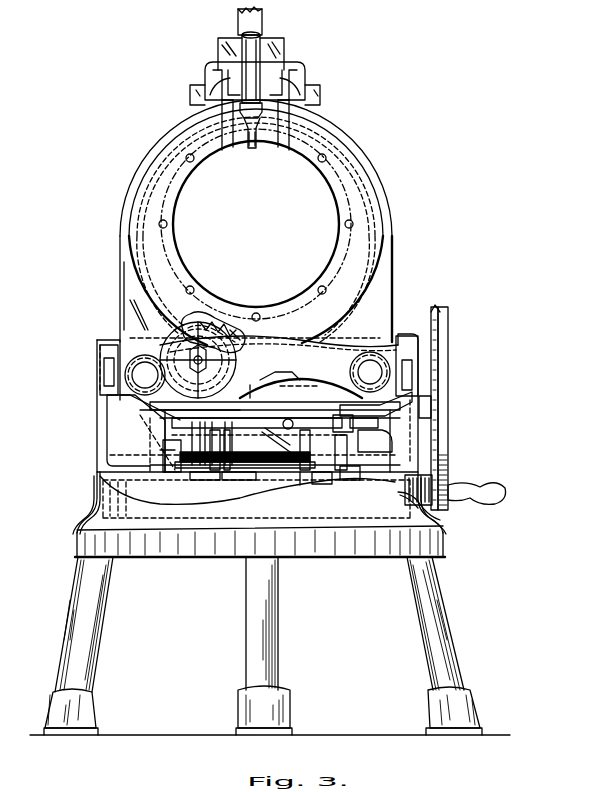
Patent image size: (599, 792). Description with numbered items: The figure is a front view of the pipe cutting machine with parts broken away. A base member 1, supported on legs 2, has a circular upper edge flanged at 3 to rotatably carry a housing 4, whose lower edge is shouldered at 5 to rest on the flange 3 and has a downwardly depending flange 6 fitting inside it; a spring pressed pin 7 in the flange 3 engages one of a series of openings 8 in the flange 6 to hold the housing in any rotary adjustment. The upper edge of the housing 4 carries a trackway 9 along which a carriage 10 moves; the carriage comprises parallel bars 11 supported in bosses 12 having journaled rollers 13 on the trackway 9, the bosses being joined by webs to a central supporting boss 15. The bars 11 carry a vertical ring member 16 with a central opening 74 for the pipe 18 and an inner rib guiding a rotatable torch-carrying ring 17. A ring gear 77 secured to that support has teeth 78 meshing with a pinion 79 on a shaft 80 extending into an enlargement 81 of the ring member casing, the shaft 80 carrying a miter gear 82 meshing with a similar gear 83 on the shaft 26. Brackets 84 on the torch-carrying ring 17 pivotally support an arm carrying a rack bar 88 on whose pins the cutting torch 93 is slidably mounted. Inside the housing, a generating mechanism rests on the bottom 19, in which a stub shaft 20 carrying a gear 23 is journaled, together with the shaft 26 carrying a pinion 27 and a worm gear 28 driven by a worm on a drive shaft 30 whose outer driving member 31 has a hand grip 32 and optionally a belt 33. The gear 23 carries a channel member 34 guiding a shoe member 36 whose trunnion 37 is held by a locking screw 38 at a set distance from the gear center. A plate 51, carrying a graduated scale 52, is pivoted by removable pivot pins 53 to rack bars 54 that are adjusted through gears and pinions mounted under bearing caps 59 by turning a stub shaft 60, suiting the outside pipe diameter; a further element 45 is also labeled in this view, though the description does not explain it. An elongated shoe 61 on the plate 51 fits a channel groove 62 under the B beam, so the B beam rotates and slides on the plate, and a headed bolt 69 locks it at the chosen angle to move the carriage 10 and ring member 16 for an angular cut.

The base member 1 is at (77, 542).
The legs 2 is at (85, 590).
The flange 3 is at (97, 505).
The housing 4 is at (97, 424).
The shoulder 5 is at (97, 468).
The downwardly depending flange 6 is at (97, 492).
The spring pressed pin 7 is at (414, 502).
The openings 8 is at (405, 488).
The trackway 9 is at (120, 396).
The carriage 10 is at (350, 372).
The parallel bars 11 is at (100, 354).
The bosses 12 is at (100, 342).
The rollers 13 is at (104, 372).
The central supporting boss 15 is at (283, 368).
The ring member 16 is at (376, 152).
The torch-carrying ring 17 is at (386, 180).
The pipe 18 is at (290, 436).
The bottom 19 is at (220, 478).
The stub shaft 20 is at (258, 480).
The gear 23 is at (262, 462).
The shaft 26 is at (215, 436).
The pinion 27 is at (232, 450).
The worm gear 28 is at (150, 425).
The drive shaft 30 is at (433, 392).
The driving member 31 is at (448, 336).
The hand grip 32 is at (500, 488).
The belt 33 is at (440, 308).
The channel member 34 is at (299, 478).
The shoe member 36 is at (319, 478).
The trunnion 37 is at (340, 474).
The locking screw 38 is at (300, 436).
The screw 45 is at (286, 442).
The plate 51 is at (178, 430).
The graduated scale 52 is at (347, 417).
The removable pivot pins 53 is at (172, 436).
The rack bars 54 is at (378, 422).
The bearing caps 59 is at (365, 440).
The stub shaft 60 is at (248, 450).
The elongated shoe 61 is at (296, 426).
The channel groove 62 is at (160, 452).
The headed bolt 69 is at (305, 390).
The opening 74 is at (322, 212).
The ring gear 77 is at (200, 322).
The teeth 78 is at (222, 332).
The pinion 79 is at (236, 340).
The shaft 80 is at (175, 332).
The enlargement 81 is at (143, 313).
The miter gear 82 is at (279, 357).
The gear 83 is at (145, 360).
The brackets 84 is at (222, 128).
The rack bar 88 is at (240, 20).
The cutting torch 93 is at (258, 52).